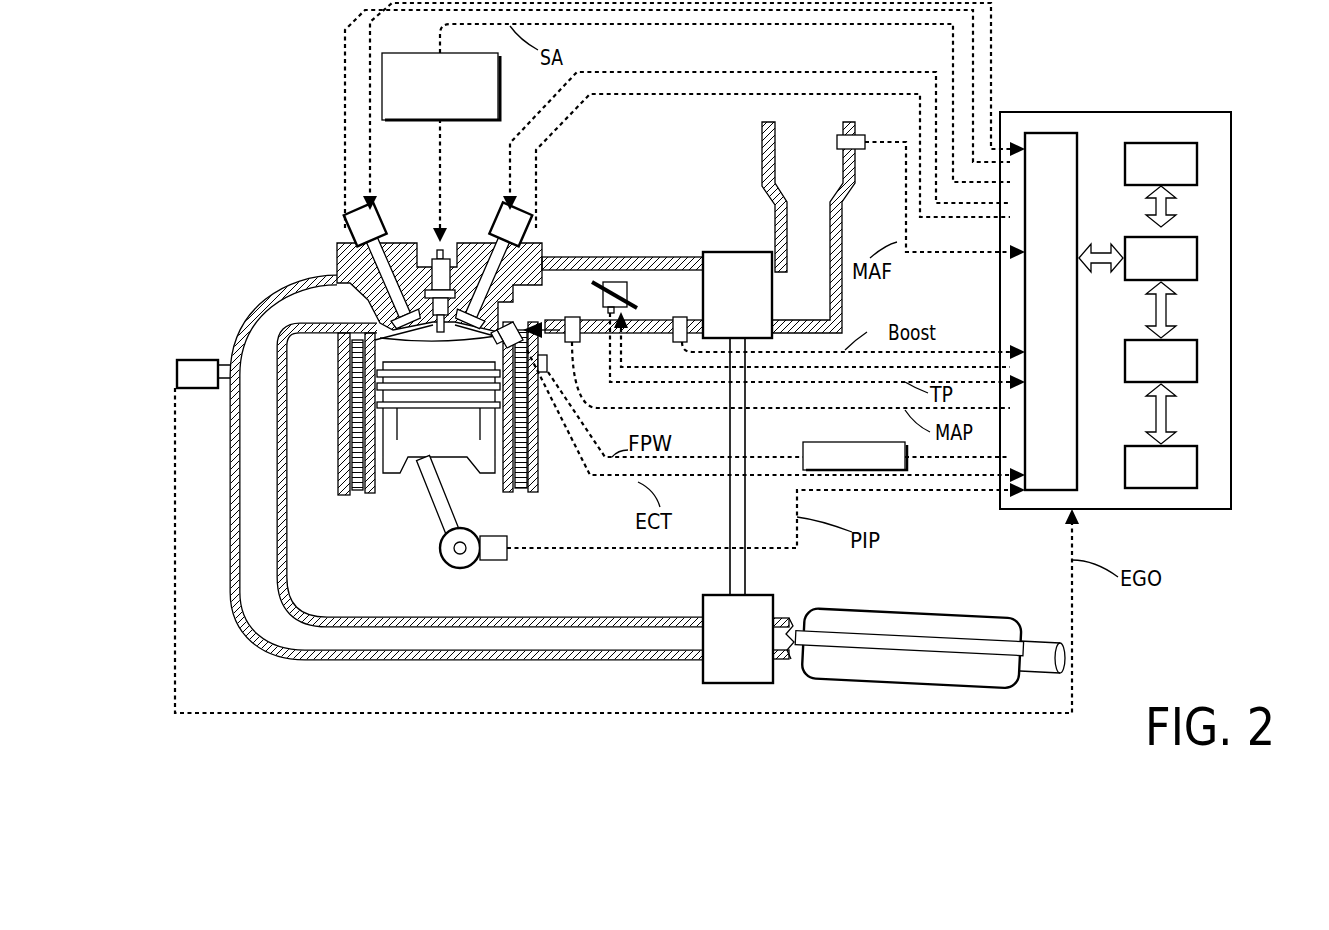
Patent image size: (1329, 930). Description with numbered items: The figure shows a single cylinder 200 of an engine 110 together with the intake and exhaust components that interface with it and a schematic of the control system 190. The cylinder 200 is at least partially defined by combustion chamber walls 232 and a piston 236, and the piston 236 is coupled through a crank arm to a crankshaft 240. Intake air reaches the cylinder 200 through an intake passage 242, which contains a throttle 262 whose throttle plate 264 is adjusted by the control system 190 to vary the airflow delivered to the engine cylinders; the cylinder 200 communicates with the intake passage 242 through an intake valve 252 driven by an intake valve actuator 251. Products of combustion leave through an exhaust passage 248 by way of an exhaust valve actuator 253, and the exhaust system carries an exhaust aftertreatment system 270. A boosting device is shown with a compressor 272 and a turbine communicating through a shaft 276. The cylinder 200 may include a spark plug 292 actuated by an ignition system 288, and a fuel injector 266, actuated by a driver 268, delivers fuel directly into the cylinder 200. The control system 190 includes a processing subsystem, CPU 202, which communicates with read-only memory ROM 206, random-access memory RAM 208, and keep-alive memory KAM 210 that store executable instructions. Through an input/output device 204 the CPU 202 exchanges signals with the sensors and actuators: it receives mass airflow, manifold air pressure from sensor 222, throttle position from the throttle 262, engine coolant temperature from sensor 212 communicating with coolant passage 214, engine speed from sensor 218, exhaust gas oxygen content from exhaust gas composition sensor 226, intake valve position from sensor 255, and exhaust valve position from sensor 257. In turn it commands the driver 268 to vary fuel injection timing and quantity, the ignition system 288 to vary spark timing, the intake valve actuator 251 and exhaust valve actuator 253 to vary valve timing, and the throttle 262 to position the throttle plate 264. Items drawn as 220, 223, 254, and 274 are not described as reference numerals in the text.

The engine 110 is at (273, 197).
The control system 190 is at (1220, 112).
The cylinder 200 is at (372, 353).
The processing subsystem (CPU) 202 is at (1197, 250).
The input/output device 204 is at (1077, 142).
The read-only memory (ROM) 206 is at (1197, 160).
The random-access memory (RAM) 208 is at (1197, 358).
The keep-alive memory (KAM) 210 is at (1197, 462).
The engine coolant temperature sensor 212 is at (542, 377).
The coolant passage 214 is at (520, 443).
The engine speed sensor 218 is at (493, 563).
The mass air flow sensor 220 is at (857, 137).
The manifold air pressure sensor 222 is at (575, 345).
The boost pressure sensor 223 is at (673, 333).
The exhaust gas composition sensor 226 is at (177, 365).
The combustion chamber walls 232 is at (380, 480).
The piston 236 is at (422, 443).
The crankshaft 240 is at (450, 567).
The intake passage 242 is at (825, 170).
The exhaust passage 248 is at (323, 317).
The intake valve actuator 251 is at (487, 200).
The intake valve 252 is at (472, 326).
The exhaust valve actuator 253 is at (390, 200).
The intake valve 254 is at (402, 316).
The intake valve position sensor 255 is at (527, 227).
The exhaust valve position sensor 257 is at (353, 228).
The throttle 262 is at (615, 282).
The throttle plate 264 is at (597, 280).
The fuel injector 266 is at (507, 332).
The driver 268 is at (805, 442).
The exhaust aftertreatment system 270 is at (980, 617).
The compressor 272 is at (722, 252).
The turbine 274 is at (703, 672).
The shaft 276 is at (745, 557).
The ignition system 288 is at (397, 53).
The spark plug 292 is at (437, 280).